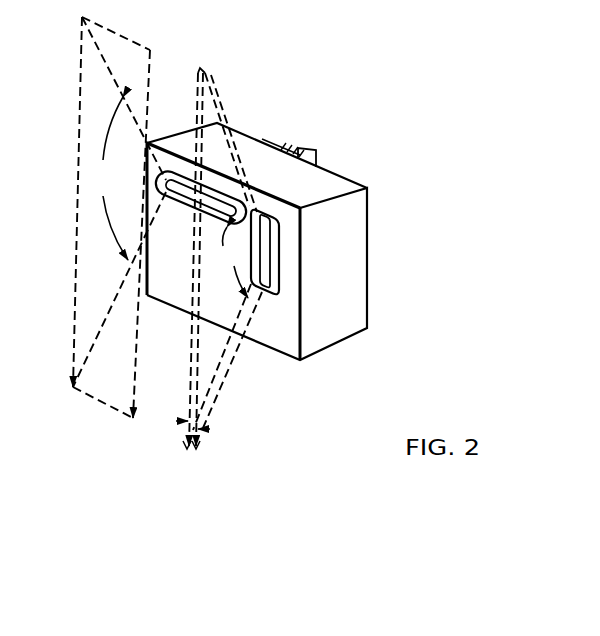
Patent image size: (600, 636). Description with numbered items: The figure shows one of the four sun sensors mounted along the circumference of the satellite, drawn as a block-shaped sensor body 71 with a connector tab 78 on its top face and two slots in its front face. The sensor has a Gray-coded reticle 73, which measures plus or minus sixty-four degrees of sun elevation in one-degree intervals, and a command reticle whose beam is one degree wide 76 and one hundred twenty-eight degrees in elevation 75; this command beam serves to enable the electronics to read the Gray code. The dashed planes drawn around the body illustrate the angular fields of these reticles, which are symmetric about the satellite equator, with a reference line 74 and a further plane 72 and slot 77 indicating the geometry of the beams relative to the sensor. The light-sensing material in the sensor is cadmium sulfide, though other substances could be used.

The housing block 71 is at (357, 224).
The first reference plane 72 is at (211, 92).
The Gray-coded reticle 73 is at (151, 57).
The reference line 74 is at (119, 202).
The command reticle beam elevation 75 is at (216, 265).
The command reticle beam 76 is at (274, 257).
The horizontal slot 77 is at (237, 187).
The connector tab 78 is at (303, 155).